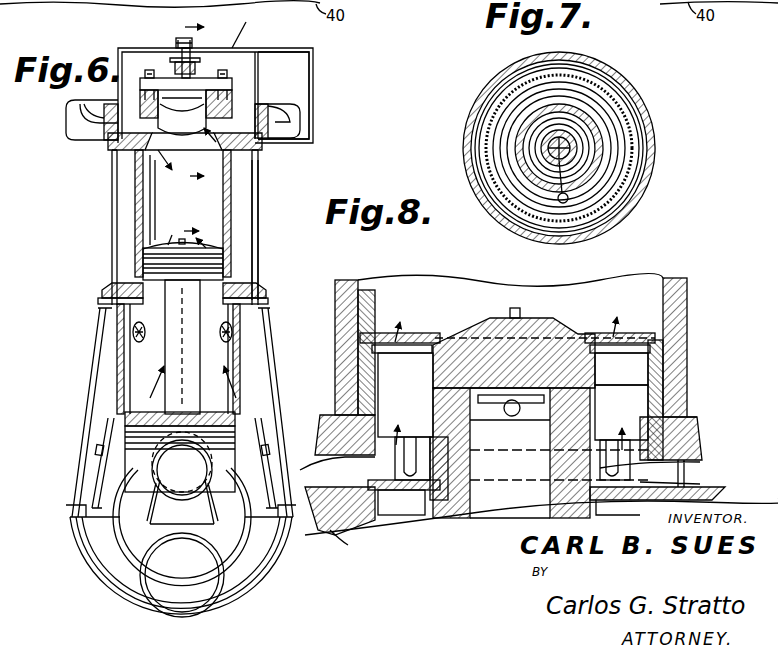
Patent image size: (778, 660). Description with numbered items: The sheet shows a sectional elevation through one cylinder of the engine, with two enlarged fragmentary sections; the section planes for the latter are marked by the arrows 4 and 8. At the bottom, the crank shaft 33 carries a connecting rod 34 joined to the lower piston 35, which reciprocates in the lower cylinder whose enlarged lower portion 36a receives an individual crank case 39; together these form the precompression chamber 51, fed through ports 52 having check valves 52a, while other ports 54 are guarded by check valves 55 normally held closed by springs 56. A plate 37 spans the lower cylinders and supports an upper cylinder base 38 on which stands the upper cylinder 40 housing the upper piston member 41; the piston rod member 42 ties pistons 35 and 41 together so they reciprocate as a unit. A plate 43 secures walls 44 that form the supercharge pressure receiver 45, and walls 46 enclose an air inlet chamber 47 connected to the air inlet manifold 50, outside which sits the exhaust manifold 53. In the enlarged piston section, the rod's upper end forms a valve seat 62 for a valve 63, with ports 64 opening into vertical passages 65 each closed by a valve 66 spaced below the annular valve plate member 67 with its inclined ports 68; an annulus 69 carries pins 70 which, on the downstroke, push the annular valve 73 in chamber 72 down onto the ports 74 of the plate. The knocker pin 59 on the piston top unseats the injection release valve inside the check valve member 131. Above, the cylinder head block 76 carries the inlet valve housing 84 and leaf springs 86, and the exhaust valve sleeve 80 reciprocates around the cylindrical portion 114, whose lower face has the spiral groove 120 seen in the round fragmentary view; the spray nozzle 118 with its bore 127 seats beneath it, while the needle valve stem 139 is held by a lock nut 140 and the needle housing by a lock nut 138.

In FIG. 6, the section line 4- 4 is at (191, 106).
In FIG. 6, the section line 8- 8 is at (193, 279).
In FIG. 6, the crank shaft 33 is at (193, 586).
In FIG. 6, the connecting rod 34 is at (193, 520).
In FIG. 6, the lower piston 35 is at (153, 466).
In FIG. 6, the enlarged lower portion 36a is at (76, 498).
In FIG. 8, the plate 37 is at (340, 544).
In FIG. 8, the upper cylinder base 38 is at (312, 426).
In FIG. 6, the crank case 39 is at (270, 568).
In FIG. 6, the upper cylinder 40 is at (226, 196).
In FIG. 8, the upper cylinder 40 is at (634, 288).
In FIG. 6, the upper piston member 41 is at (150, 252).
In FIG. 8, the upper piston member 41 is at (478, 322).
In FIG. 6, the piston rod member 42 is at (193, 347).
In FIG. 6, the plate 43 is at (240, 163).
In FIG. 6, the walls 44 is at (259, 263).
In FIG. 6, the supercharge pressure receiver 45 is at (258, 241).
In FIG. 6, the walls 46 is at (92, 372).
In FIG. 6, the air inlet chamber 47 is at (272, 366).
In FIG. 6, the air inlet manifold 50 is at (240, 52).
In FIG. 6, the precompression chamber 51 is at (86, 534).
In FIG. 6, the ports 52 is at (232, 336).
In FIG. 6, the check valves 52a is at (130, 333).
In FIG. 6, the exhaust manifold 53 is at (300, 63).
In FIG. 6, the ports 54 is at (92, 432).
In FIG. 6, the check valves 55 is at (96, 466).
In FIG. 6, the springs 56 is at (92, 406).
In FIG. 8, the knocker pin 59 is at (516, 307).
In FIG. 8, the valve seat 62 is at (556, 411).
In FIG. 8, the valve 63 is at (496, 409).
In FIG. 8, the ports 64 is at (621, 412).
In FIG. 8, the vertical passages 65 is at (627, 386).
In FIG. 8, the valve 66 is at (690, 352).
In FIG. 8, the annular valve plate member 67 is at (600, 330).
In FIG. 8, the inclined ports 68 is at (394, 330).
In FIG. 8, the annulus 69 is at (410, 421).
In FIG. 6, the pins 70 is at (262, 290).
In FIG. 8, the pins 70 is at (394, 432).
In FIG. 6, the chamber 72 is at (106, 290).
In FIG. 8, the chamber 72 is at (705, 462).
In FIG. 6, the annular valve 73 is at (100, 303).
In FIG. 8, the annular valve 73 is at (370, 478).
In FIG. 6, the ports 74 is at (267, 302).
In FIG. 8, the ports 74 is at (398, 506).
In FIG. 6, the cylinder head block 76 is at (232, 104).
In FIG. 7, the exhaust valve sleeve 80 is at (632, 93).
In FIG. 6, the inlet valve housing 84 is at (206, 80).
In FIG. 6, the leaf springs 86 is at (118, 98).
In FIG. 7, the cylindrical portion 114 is at (571, 72).
In FIG. 7, the spray nozzle 118 is at (582, 146).
In FIG. 7, the spiral groove 120 is at (512, 125).
In FIG. 7, the bore 127 is at (590, 168).
In FIG. 6, the check valve member 131 is at (116, 141).
In FIG. 6, the lock nut 138 is at (176, 63).
In FIG. 6, the needle valve stem 139 is at (178, 40).
In FIG. 6, the lock nut 140 is at (255, 26).